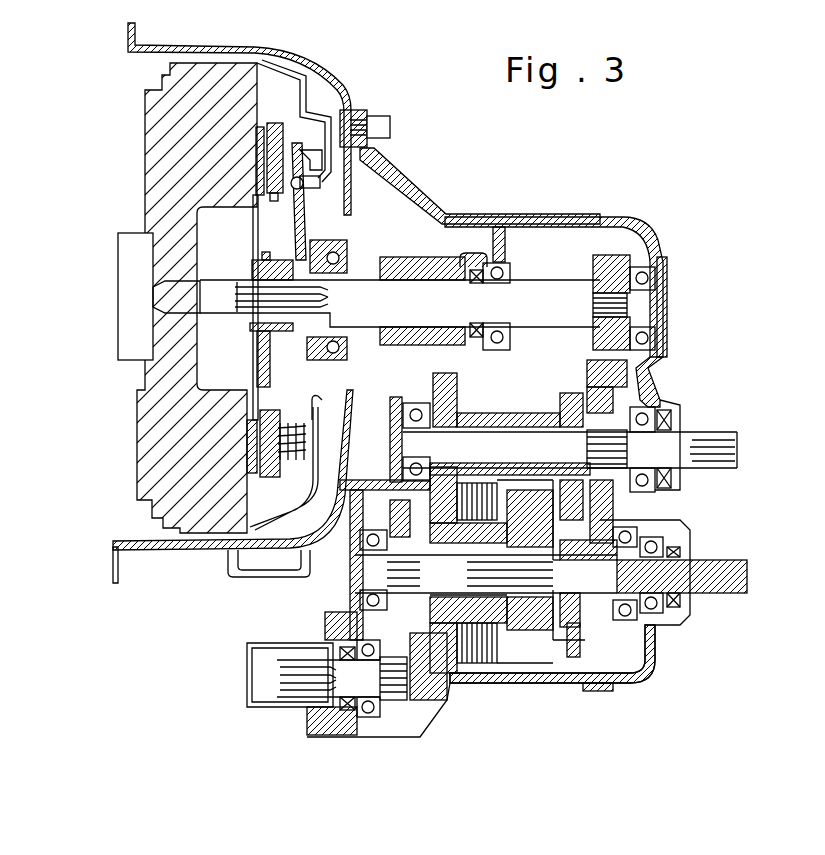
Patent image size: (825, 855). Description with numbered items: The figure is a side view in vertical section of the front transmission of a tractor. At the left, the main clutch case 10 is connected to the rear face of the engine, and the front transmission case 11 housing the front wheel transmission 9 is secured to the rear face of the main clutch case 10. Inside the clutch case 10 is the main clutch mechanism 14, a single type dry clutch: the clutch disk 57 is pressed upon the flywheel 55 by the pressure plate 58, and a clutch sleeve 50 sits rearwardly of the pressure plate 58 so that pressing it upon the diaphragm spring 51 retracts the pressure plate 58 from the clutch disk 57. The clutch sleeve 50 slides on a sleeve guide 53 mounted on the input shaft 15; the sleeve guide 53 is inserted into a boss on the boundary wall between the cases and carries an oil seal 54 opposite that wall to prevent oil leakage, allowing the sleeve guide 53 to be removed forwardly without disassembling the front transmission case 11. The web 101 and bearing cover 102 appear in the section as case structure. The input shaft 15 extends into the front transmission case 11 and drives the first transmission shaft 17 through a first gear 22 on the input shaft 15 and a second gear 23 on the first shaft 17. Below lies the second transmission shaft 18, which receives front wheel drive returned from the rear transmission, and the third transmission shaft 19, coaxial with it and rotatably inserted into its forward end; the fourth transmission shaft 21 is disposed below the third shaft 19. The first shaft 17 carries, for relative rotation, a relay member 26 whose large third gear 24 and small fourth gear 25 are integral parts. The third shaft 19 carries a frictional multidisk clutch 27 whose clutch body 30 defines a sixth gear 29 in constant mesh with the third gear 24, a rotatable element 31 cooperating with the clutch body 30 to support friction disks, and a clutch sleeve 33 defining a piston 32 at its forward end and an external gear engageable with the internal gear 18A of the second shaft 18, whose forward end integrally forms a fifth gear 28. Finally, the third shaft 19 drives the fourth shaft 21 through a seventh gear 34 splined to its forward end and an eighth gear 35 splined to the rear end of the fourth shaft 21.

The front wheel transmission 9 is at (590, 695).
The main clutch case 10 is at (190, 551).
The front transmission case 11 is at (562, 216).
The main clutch mechanism 14 is at (370, 207).
The input shaft 15 is at (562, 280).
The first transmission shaft 17 is at (723, 434).
The second transmission shaft 18 is at (747, 575).
The internal gear 18A is at (580, 620).
The third transmission shaft 19 is at (372, 572).
The fourth transmission shaft 21 is at (273, 692).
The first gear 22 is at (620, 252).
The second gear 23 is at (613, 360).
The third gear 24 is at (458, 378).
The fourth gear 25 is at (583, 395).
The relay member 26 is at (510, 406).
The frictional multidisk clutch 27 is at (475, 665).
The fifth gear 28 is at (623, 680).
The sixth gear 29 is at (433, 702).
The clutch body 30 is at (468, 691).
The rotatable element 31 is at (502, 655).
The piston 32 is at (520, 673).
The clutch sleeve 33 is at (564, 661).
The seventh gear 34 is at (397, 500).
The eighth gear 35 is at (407, 733).
The clutch sleeve 50 is at (363, 355).
The diaphragm spring 51 is at (306, 222).
The sleeve guide 53 is at (461, 263).
The oil seal 54 is at (474, 288).
The flywheel 55 is at (150, 439).
The clutch disk 57 is at (258, 197).
The pressure plate 58 is at (280, 195).
The case web 101 is at (528, 241).
The bearing cover 102 is at (406, 733).